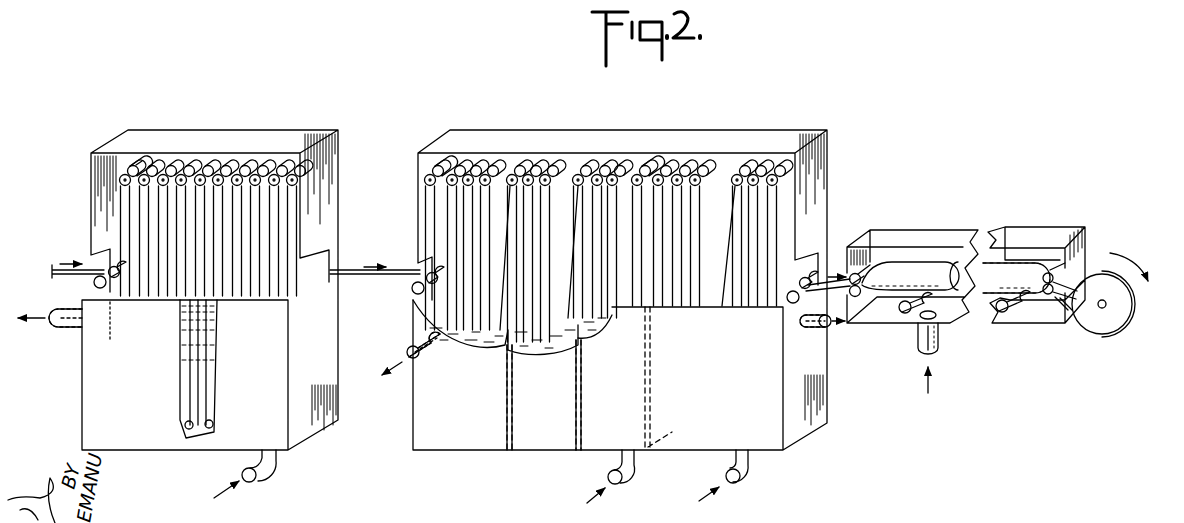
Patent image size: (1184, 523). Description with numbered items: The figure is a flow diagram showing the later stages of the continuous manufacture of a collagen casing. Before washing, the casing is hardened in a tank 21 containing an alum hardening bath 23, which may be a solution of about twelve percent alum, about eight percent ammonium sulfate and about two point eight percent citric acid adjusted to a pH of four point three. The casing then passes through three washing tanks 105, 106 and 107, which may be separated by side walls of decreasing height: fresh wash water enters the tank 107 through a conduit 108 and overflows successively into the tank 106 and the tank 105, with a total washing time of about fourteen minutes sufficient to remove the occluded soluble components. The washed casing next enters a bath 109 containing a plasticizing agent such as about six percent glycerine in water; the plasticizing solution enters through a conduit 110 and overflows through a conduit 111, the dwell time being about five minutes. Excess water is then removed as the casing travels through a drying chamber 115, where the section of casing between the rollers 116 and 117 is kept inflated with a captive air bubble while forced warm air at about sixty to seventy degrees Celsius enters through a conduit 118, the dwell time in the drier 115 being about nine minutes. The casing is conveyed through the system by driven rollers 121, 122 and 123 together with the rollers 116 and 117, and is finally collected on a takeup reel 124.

The tank 21 is at (191, 314).
The alum hardening bath 23 is at (181, 378).
The washing tank 105 is at (440, 450).
The washing tank 106 is at (537, 450).
The washing tank 107 is at (603, 450).
The conduit 108 is at (621, 470).
The plasticizing bath tank 109 is at (625, 309).
The conduit 110 is at (748, 470).
The conduit 111 is at (813, 328).
The drying chamber 115 is at (1061, 232).
The roller 116 is at (868, 264).
The roller 117 is at (1044, 301).
The conduit 118 is at (918, 351).
The driven roller 121 is at (126, 167).
The driven roller 122 is at (430, 173).
The driven roller 123 is at (642, 165).
The takeup reel 124 is at (1115, 333).